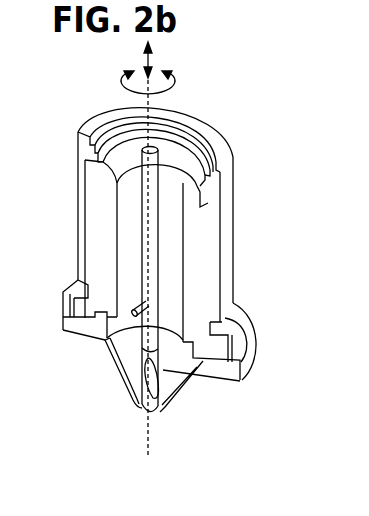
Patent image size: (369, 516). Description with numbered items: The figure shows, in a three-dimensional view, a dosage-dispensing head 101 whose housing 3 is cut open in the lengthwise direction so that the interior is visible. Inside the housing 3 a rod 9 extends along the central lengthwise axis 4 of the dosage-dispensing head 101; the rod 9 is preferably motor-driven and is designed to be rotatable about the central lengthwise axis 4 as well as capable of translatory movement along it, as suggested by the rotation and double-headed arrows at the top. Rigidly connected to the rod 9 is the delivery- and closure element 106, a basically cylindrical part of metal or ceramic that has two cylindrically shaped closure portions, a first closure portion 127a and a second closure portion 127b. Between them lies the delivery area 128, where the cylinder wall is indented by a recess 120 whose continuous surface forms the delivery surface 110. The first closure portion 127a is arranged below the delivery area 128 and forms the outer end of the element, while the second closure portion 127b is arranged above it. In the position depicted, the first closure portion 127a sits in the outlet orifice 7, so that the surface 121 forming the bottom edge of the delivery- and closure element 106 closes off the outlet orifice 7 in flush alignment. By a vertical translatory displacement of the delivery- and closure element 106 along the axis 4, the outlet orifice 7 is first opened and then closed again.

The dosage-dispensing head 101 is at (248, 156).
The central lengthwise axis 4 is at (150, 103).
The rod 9 is at (143, 211).
The housing 3 is at (55, 319).
The delivery area 128 is at (140, 378).
The delivery- and closure element 106 is at (134, 388).
The first closure portion 127a is at (135, 408).
The surface 121 is at (146, 414).
The outlet orifice 7 is at (160, 413).
The recess 120 is at (152, 382).
The delivery surface 110 is at (149, 364).
The second closure portion 127b is at (196, 376).